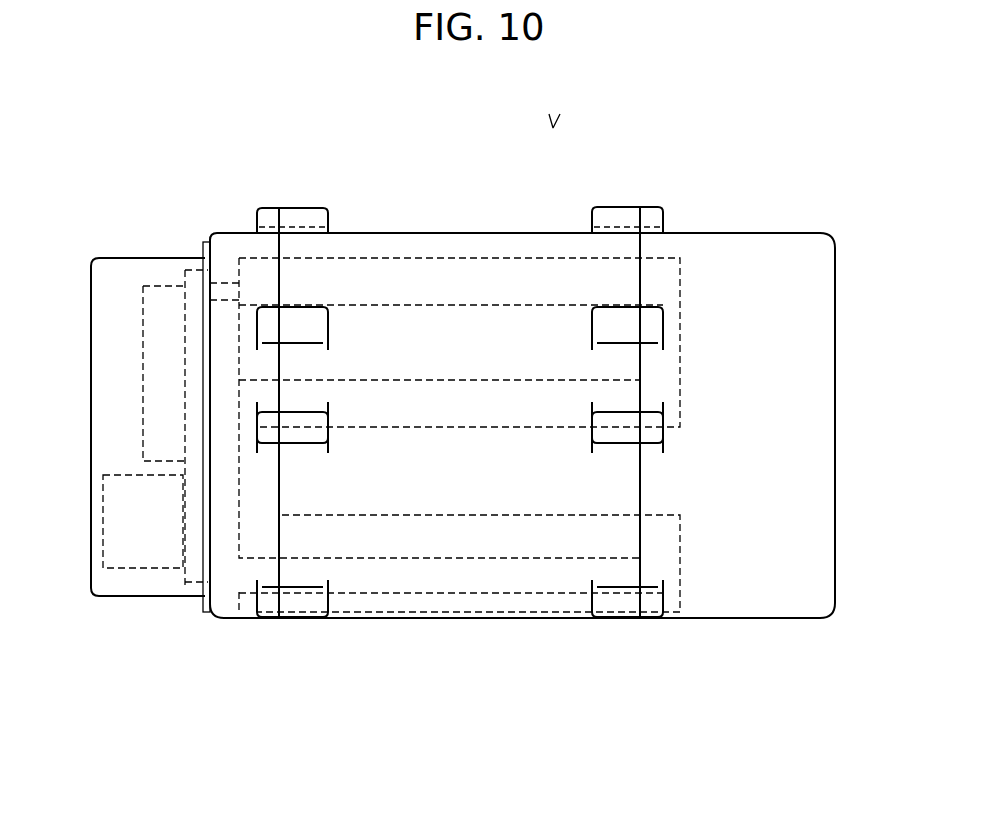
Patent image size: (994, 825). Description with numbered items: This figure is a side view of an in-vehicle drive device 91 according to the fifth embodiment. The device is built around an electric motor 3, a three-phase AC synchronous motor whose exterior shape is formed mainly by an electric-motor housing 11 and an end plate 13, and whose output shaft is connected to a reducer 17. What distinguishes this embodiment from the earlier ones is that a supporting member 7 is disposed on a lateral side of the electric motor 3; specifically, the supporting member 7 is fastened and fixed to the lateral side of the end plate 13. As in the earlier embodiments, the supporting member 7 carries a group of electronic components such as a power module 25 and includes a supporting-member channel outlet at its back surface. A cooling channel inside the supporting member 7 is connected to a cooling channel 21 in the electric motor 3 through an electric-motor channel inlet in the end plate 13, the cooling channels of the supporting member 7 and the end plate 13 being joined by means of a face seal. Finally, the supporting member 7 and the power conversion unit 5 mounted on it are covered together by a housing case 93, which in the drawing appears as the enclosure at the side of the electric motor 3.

The in-vehicle drive device 91 is at (553, 128).
The housing case 93 is at (147, 258).
The end plate 13 is at (233, 232).
The cooling channel 21 is at (383, 278).
The power module 25 is at (143, 332).
The power conversion unit 5 is at (122, 427).
The supporting member 7 is at (192, 575).
The reducer 17 is at (835, 370).
The electric motor 3 is at (413, 648).
The electric-motor housing 11 is at (541, 620).